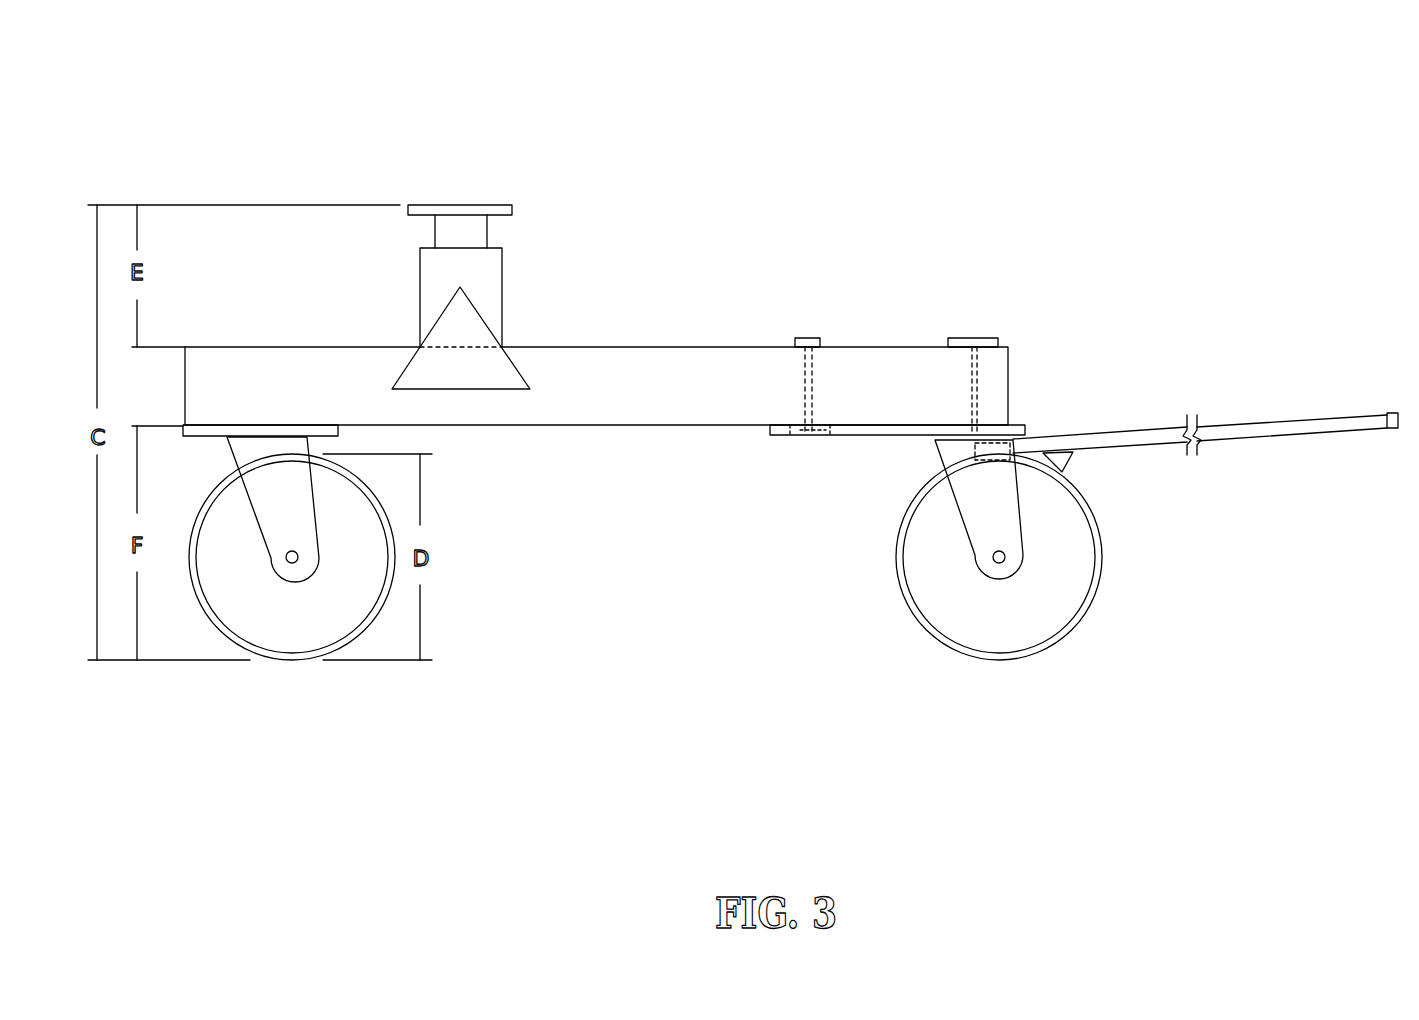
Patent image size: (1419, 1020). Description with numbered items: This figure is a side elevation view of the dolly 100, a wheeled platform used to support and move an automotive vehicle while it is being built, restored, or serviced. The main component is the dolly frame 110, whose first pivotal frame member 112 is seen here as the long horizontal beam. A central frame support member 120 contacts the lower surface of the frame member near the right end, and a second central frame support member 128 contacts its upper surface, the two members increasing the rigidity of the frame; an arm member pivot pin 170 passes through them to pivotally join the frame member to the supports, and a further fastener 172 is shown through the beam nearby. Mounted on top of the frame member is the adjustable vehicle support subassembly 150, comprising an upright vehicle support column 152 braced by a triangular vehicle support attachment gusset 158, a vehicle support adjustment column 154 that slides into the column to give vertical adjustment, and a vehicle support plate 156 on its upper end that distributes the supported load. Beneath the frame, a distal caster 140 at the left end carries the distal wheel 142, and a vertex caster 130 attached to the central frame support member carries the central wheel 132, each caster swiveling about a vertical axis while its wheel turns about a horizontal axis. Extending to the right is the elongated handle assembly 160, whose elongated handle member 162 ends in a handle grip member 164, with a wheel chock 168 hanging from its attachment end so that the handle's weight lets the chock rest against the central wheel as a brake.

The dolly 100 is at (907, 135).
The dolly frame 110 is at (580, 445).
The first pivotal frame member 112 is at (641, 400).
The central frame support member 120 is at (838, 435).
The second central frame support member 128 is at (1000, 338).
The vertex caster 130 is at (966, 500).
The central wheel 132 is at (920, 628).
The distal caster 140 is at (257, 500).
The distal wheel 142 is at (215, 628).
The adjustable vehicle support subassembly 150 is at (535, 180).
The vehicle support column 152 is at (492, 285).
The vehicle support adjustment column 154 is at (478, 236).
The vehicle support plate 156 is at (460, 205).
The vehicle support attachment gusset 158 is at (473, 345).
The elongated handle assembly 160 is at (1258, 365).
The elongated handle member 162 is at (1272, 440).
The handle grip member 164 is at (1393, 413).
The wheel chock 168 is at (1075, 470).
The arm member pivot pin 170 is at (972, 338).
The bolt 172 is at (808, 338).